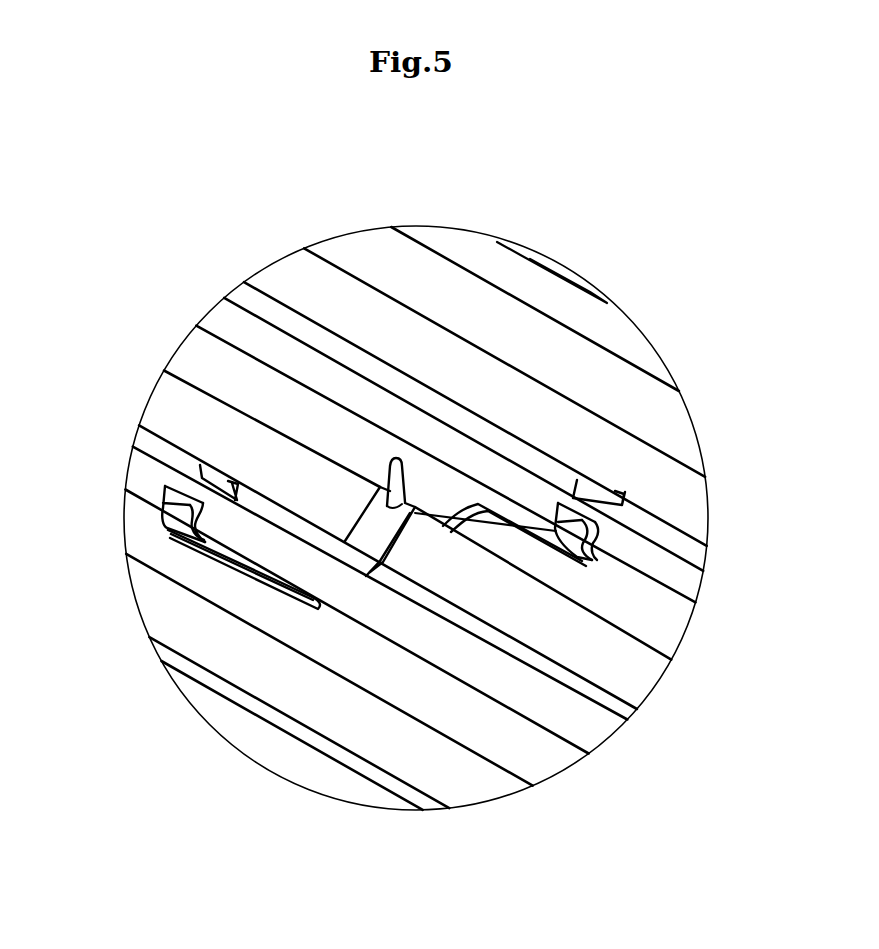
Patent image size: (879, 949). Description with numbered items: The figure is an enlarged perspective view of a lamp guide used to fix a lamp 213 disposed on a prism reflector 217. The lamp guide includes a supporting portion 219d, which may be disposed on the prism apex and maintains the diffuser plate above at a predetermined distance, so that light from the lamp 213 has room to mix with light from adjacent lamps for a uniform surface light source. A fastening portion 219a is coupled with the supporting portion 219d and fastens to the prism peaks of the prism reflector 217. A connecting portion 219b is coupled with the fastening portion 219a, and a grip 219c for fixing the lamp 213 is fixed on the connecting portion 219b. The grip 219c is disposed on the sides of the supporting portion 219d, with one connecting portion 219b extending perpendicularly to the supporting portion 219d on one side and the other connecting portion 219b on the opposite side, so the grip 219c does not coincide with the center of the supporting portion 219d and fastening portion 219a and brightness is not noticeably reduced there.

The lamp 213 is at (468, 290).
The prism reflector 217 is at (512, 393).
The fastening portion 219a is at (377, 527).
The connecting portion 219b is at (346, 549).
The grip 219c is at (562, 520).
The supporting portion 219d is at (395, 455).